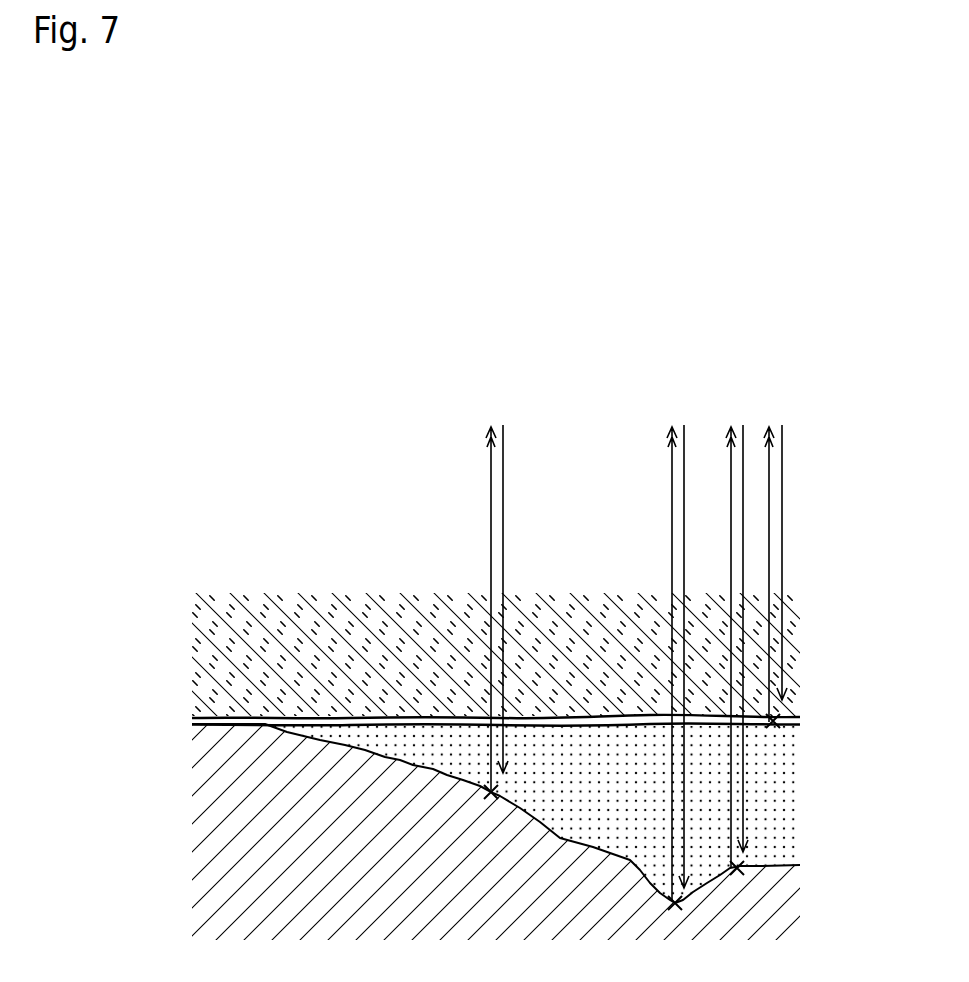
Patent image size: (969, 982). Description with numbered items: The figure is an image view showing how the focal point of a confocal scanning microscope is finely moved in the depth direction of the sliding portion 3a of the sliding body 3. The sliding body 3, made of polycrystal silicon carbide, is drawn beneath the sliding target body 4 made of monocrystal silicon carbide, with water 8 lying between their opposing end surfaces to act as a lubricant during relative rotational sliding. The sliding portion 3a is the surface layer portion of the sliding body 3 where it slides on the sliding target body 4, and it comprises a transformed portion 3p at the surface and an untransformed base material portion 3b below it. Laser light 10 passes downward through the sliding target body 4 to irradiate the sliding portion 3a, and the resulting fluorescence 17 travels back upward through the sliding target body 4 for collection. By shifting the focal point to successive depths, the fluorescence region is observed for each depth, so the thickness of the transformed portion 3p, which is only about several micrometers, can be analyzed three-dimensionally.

The sliding body 3 is at (183, 890).
The sliding portion 3a is at (132, 644).
The transformed portion 3p is at (446, 730).
The base material portion 3b is at (243, 837).
The sliding target body 4 is at (624, 642).
The water 8 is at (532, 720).
The laser light 10 is at (782, 543).
The fluorescence 17 is at (770, 487).